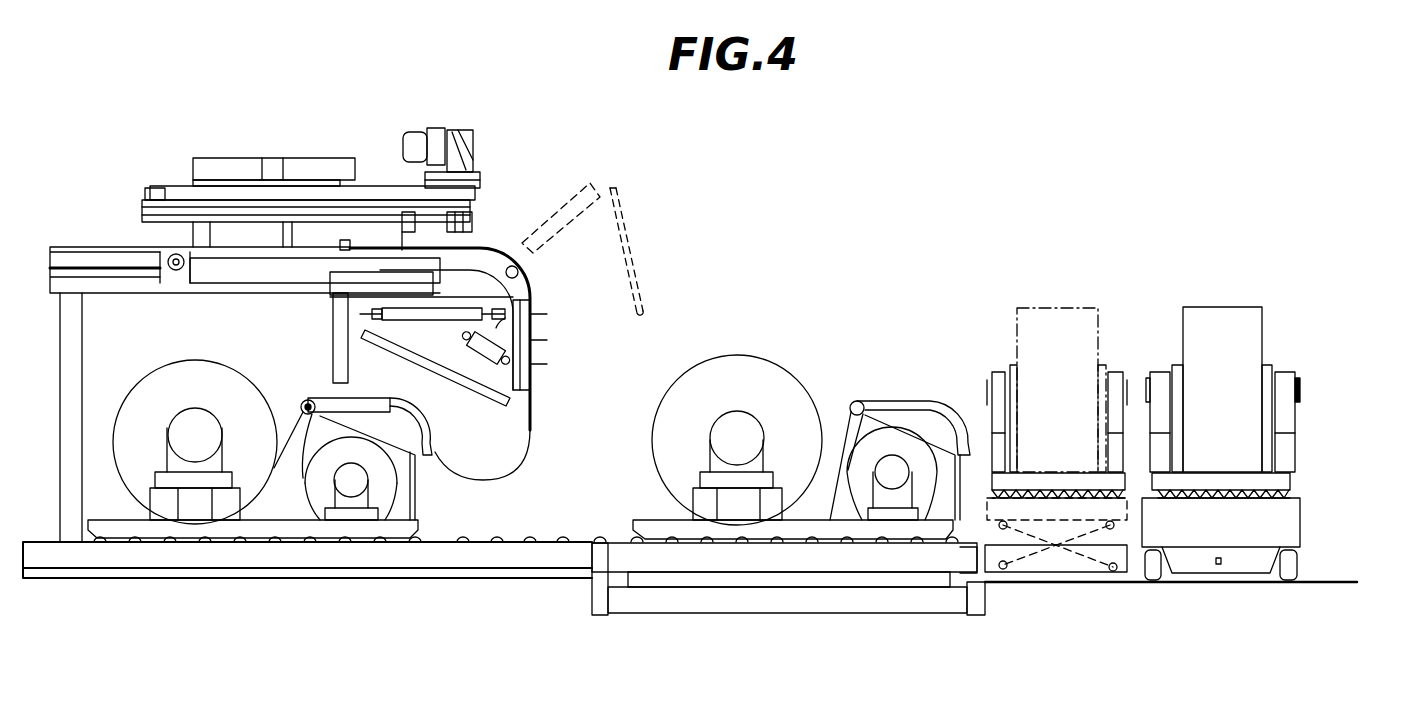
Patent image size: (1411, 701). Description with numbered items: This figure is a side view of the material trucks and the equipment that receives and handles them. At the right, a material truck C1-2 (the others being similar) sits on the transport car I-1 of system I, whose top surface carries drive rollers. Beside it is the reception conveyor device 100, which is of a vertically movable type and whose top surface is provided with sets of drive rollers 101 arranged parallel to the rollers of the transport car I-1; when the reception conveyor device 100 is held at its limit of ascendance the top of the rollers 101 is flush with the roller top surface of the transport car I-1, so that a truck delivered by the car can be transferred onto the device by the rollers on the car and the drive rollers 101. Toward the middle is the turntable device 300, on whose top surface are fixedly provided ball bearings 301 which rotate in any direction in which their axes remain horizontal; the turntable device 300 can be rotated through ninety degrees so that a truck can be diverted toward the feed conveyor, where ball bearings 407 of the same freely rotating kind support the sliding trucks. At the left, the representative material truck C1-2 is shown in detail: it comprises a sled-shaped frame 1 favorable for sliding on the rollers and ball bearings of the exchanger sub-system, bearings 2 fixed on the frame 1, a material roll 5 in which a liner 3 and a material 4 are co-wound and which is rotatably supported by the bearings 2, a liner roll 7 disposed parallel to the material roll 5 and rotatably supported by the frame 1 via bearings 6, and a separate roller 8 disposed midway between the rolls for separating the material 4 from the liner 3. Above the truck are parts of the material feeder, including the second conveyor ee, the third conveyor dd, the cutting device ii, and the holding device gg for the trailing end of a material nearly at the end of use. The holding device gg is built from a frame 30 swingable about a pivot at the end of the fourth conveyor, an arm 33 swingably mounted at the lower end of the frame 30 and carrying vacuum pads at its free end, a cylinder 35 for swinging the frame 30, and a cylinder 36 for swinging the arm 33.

The material feed conveyor device (second conveyor) ee is at (71, 243).
The material feed conveyor device (third conveyor) dd is at (269, 247).
The cutting device ii is at (298, 157).
The cylinder 35 is at (472, 312).
The material 4 is at (464, 448).
The holding device for a trailing end of a material gg is at (535, 307).
The cylinder 36 is at (485, 330).
The arm 33 is at (422, 338).
The frame 30 is at (540, 217).
The material roll 5 is at (198, 357).
The bearings 2 is at (226, 446).
The bearings 6 is at (368, 482).
The liner 3 is at (347, 398).
The liner roll 7 is at (377, 397).
The separate roller 8 is at (307, 415).
The sled-shaped frame 1 is at (418, 520).
The ball bearings 407 is at (528, 538).
The material truck C1-2 is at (243, 368).
The ball bearings 301 is at (596, 538).
The turntable device 300 is at (645, 605).
The drive rollers 101 is at (1042, 492).
The reception conveyor device 100 is at (1130, 562).
The transport car I-1 is at (1300, 527).